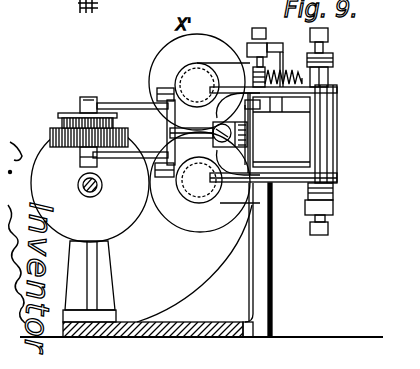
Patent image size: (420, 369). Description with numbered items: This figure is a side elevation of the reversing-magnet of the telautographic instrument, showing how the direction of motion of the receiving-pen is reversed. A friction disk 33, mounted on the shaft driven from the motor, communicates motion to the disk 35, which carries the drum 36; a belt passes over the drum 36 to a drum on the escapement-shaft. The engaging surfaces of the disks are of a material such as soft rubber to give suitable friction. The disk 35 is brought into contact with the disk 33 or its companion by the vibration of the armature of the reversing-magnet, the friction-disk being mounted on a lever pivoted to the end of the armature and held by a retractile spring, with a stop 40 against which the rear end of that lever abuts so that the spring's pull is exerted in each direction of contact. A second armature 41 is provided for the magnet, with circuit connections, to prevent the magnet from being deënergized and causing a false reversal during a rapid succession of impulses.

The disk 33 is at (90, 183).
The disk 35 is at (52, 135).
The drum 36 is at (66, 114).
The stop 40 is at (241, 136).
The second armature 41 is at (265, 67).